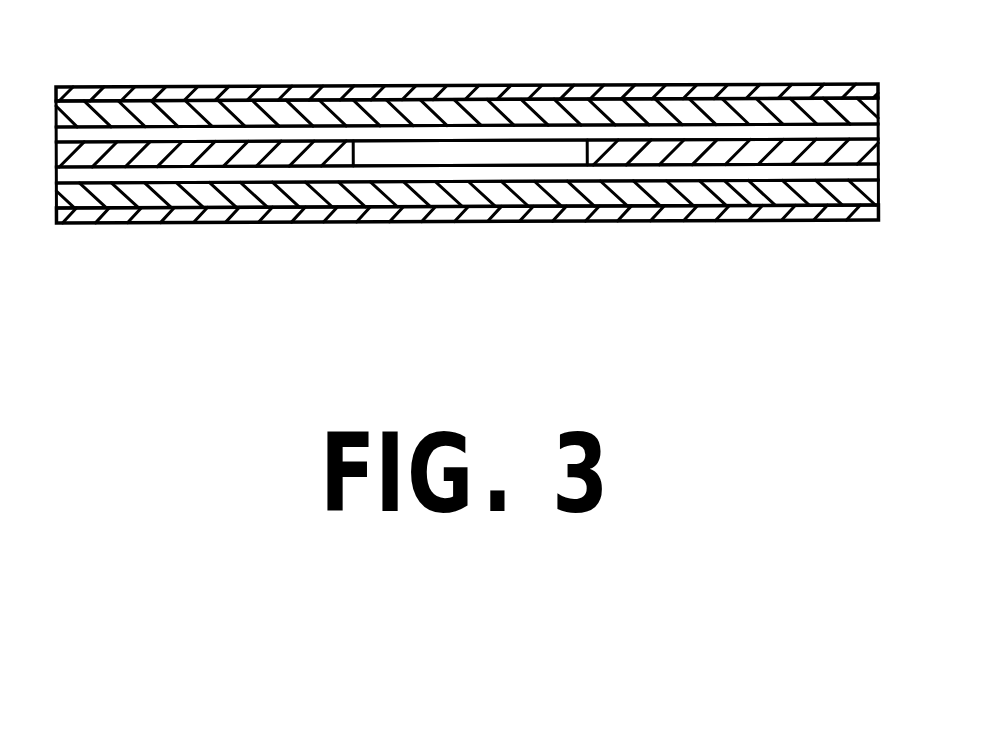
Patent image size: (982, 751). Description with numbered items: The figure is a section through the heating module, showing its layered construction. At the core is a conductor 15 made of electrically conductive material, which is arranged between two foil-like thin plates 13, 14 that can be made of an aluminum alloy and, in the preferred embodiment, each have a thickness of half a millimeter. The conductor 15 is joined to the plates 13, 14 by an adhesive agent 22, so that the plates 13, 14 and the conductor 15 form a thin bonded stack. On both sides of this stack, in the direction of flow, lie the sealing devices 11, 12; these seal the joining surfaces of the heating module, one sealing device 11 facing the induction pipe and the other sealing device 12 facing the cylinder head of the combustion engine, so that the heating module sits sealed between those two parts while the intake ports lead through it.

The sealing device 11 is at (463, 208).
The sealing device 12 is at (604, 96).
The foil-like thin plate 13 is at (397, 192).
The foil-like thin plate 14 is at (355, 103).
The conductor 15 is at (448, 167).
The adhesive agent 22 is at (213, 140).